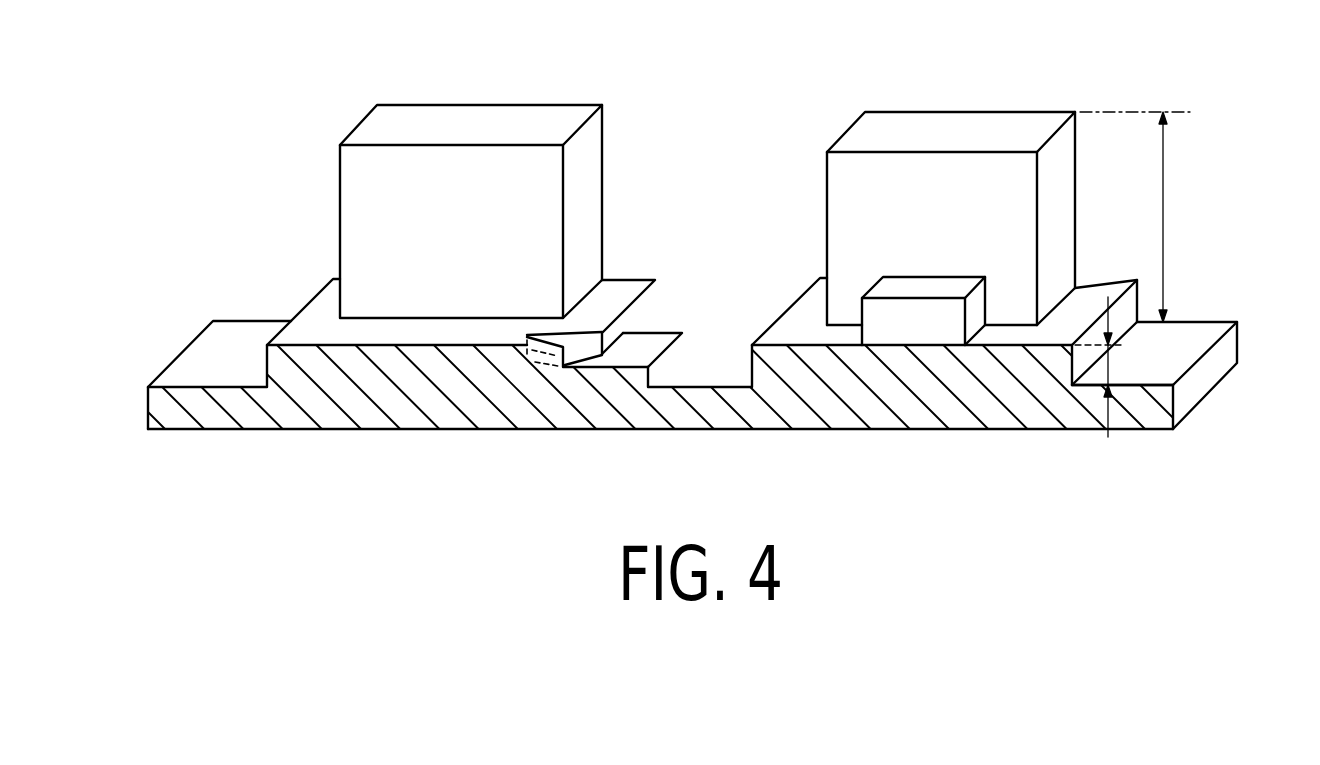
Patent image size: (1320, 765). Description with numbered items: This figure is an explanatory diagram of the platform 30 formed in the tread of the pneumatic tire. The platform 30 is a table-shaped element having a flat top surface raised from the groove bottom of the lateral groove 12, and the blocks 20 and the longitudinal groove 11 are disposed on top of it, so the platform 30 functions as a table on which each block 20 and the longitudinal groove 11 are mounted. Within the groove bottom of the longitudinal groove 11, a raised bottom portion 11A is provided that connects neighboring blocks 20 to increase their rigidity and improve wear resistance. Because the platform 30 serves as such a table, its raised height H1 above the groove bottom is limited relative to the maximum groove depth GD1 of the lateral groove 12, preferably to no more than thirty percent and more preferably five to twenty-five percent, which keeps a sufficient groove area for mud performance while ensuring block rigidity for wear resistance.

The longitudinal groove 11 is at (390, 333).
The raised bottom portion 11A is at (910, 292).
The lateral groove 12 is at (727, 335).
The block 20 is at (470, 118).
The platform 30 is at (622, 288).
The maximum groove depth GD1 is at (1157, 217).
The raised height H1 is at (1105, 368).